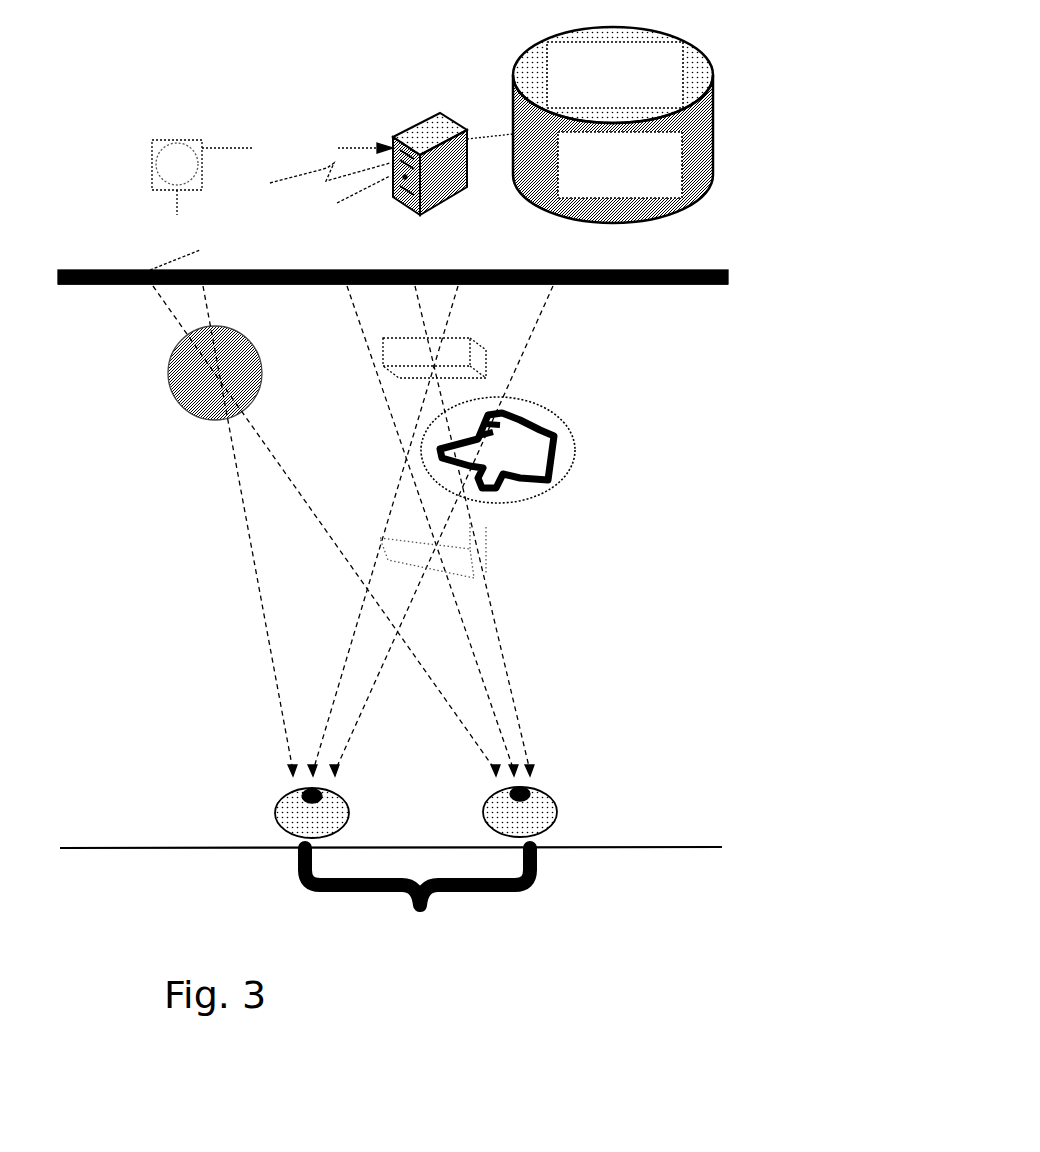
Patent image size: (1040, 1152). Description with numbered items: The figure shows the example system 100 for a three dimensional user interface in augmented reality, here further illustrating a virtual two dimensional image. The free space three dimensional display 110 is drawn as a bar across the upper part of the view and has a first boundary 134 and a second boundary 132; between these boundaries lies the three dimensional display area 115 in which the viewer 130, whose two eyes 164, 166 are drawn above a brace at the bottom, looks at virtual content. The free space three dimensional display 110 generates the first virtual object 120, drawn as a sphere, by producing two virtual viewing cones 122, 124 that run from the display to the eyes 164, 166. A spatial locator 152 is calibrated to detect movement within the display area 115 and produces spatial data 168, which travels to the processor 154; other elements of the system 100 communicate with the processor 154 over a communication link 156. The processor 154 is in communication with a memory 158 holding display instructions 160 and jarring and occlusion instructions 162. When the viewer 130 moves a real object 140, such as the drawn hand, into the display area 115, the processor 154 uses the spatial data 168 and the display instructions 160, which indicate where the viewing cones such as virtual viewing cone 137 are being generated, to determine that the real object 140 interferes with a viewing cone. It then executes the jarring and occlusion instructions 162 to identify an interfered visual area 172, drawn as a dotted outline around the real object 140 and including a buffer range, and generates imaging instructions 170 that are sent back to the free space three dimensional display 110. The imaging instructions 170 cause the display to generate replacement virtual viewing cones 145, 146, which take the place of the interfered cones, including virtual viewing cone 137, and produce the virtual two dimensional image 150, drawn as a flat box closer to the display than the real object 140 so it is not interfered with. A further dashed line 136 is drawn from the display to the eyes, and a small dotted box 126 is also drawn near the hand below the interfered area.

The system 100 is at (198, 42).
The free space three dimensional display 110 is at (100, 272).
The 3D display area 115 is at (104, 601).
The first virtual object 120 is at (195, 371).
The virtual viewing cone 122 is at (246, 522).
The virtual viewing cone 124 is at (313, 514).
The virtual object (box) 126 is at (472, 527).
The viewer 130 is at (390, 915).
The second boundary 132 is at (76, 847).
The first boundary 134 is at (70, 287).
The line of sight 136 is at (550, 303).
The virtual viewing cone 137 is at (395, 430).
The real object 140 is at (540, 463).
The virtual viewing cone 145 is at (358, 624).
The virtual viewing cone 146 is at (493, 638).
The virtual two dimensional image 150 is at (462, 344).
The spatial locator 152 is at (177, 188).
The processor 154 is at (404, 212).
The communication link 156 is at (317, 181).
The memory 158 is at (596, 140).
The display instructions 160 is at (563, 175).
The jarring and occlusion instructions 162 is at (551, 82).
The eye 164 is at (340, 818).
The eye 166 is at (493, 814).
The spatial data 168 is at (301, 137).
The imaging instructions 170 is at (281, 238).
The interfered visual area 172 is at (573, 430).